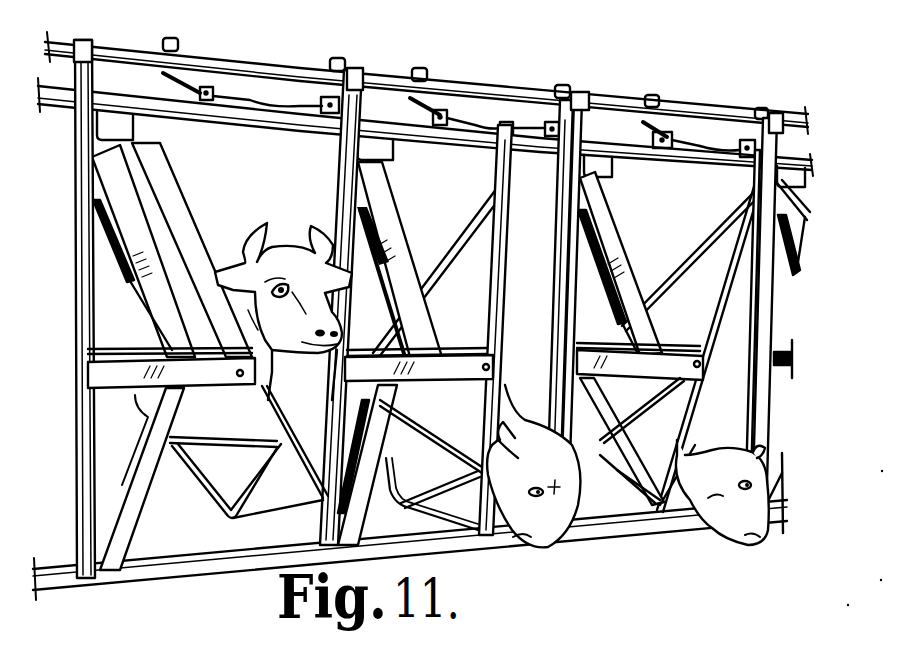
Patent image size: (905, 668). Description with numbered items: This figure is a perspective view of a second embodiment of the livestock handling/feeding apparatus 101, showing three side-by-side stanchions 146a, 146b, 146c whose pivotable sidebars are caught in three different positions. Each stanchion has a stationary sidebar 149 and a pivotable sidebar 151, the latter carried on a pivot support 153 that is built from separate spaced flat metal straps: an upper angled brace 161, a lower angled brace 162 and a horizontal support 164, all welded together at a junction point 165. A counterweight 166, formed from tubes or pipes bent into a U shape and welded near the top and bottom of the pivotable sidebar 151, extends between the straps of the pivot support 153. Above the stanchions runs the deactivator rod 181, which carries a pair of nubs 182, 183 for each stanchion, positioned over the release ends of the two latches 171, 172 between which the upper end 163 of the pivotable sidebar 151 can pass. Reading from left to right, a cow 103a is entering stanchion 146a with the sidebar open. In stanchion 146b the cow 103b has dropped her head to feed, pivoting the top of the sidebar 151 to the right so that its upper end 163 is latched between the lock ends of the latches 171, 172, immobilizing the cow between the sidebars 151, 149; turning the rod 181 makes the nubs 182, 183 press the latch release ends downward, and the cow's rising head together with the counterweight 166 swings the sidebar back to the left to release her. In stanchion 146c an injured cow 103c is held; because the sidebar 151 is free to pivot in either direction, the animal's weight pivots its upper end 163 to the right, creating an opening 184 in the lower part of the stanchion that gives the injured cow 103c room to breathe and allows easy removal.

The livestock handling/feeding apparatus 101 is at (572, 48).
The cow 103a is at (257, 362).
The cow 103b is at (547, 428).
The injured cow 103c is at (723, 440).
The stanchion 146a is at (251, 177).
The stanchion 146b is at (453, 186).
The stanchion 146c is at (686, 199).
The stationary sidebar 149 is at (327, 207).
The pivotable sidebar 151 is at (193, 240).
The pivot support 153 is at (424, 300).
The upper angled brace 161 is at (387, 237).
The lower angled brace 162 is at (377, 516).
The upper end of the pivotable sidebar 163 is at (507, 122).
The horizontal support 164 is at (363, 350).
The junction point 165 is at (444, 343).
The counterweight 166 is at (667, 283).
The latch 171 is at (677, 132).
The latch 172 is at (741, 142).
The rod 181 is at (300, 77).
The nub 182 is at (179, 46).
The nub 183 is at (336, 59).
The opening 184 is at (756, 434).